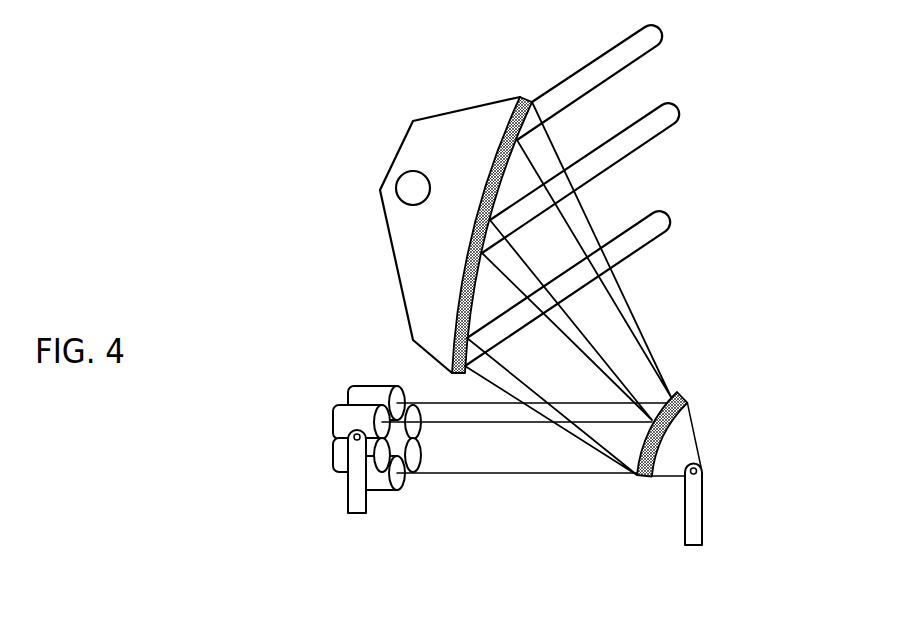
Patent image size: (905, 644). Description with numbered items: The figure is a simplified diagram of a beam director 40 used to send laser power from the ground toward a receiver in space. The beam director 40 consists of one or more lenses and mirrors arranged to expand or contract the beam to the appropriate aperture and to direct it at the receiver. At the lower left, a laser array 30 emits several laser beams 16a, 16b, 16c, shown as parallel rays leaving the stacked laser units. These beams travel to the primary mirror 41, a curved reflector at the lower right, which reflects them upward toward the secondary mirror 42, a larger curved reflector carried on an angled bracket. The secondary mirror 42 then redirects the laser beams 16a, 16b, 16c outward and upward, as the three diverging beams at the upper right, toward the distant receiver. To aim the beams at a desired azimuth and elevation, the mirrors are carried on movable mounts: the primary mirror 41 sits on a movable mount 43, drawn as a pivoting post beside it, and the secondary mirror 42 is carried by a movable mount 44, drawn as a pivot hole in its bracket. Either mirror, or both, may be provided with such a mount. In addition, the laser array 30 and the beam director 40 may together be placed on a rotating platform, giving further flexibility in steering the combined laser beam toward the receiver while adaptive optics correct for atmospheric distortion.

The beam director 40 is at (307, 193).
The secondary mirror 42 is at (523, 96).
The movable mount 44 is at (403, 170).
The laser beam 16a is at (657, 46).
The laser beam 16b is at (674, 125).
The laser beam 16c is at (665, 236).
The laser array 30 is at (357, 387).
The primary mirror 41 is at (684, 400).
The movable mount 43 is at (702, 486).